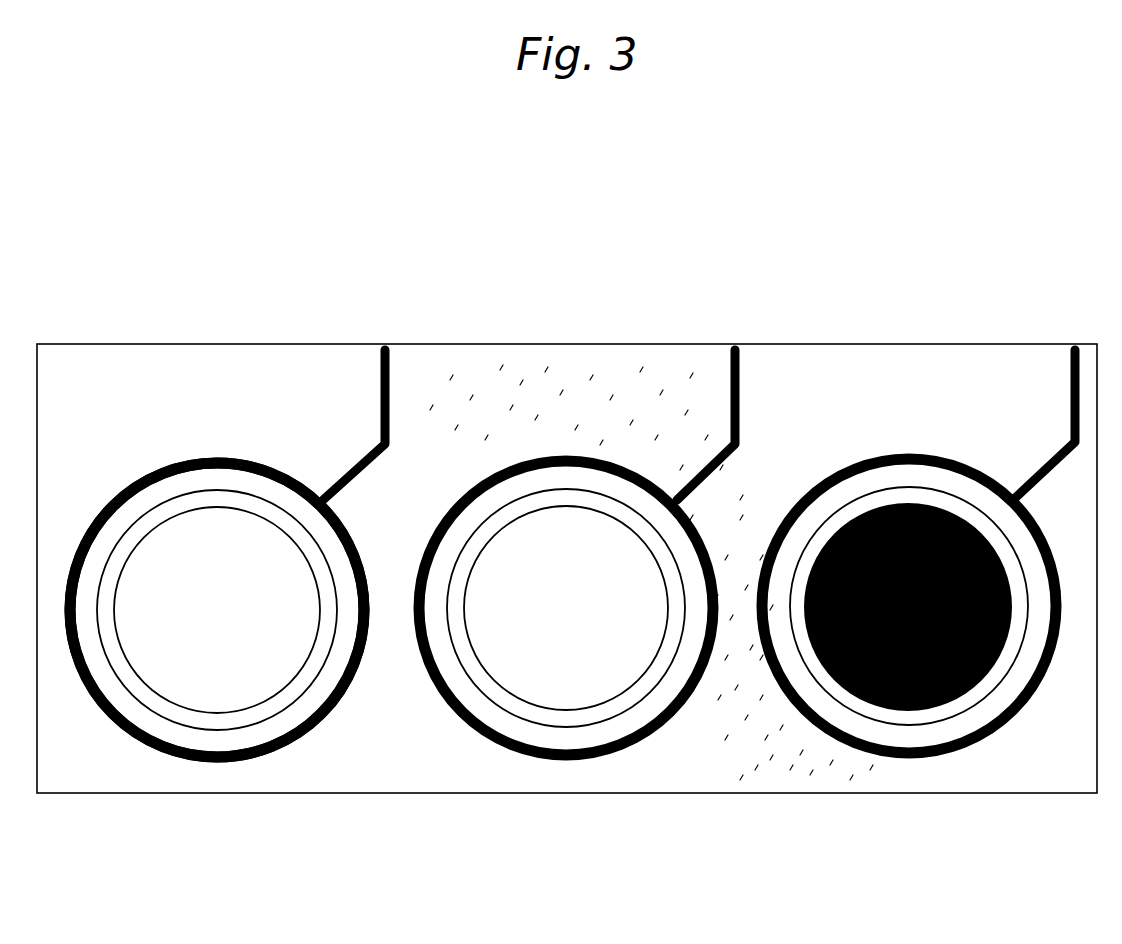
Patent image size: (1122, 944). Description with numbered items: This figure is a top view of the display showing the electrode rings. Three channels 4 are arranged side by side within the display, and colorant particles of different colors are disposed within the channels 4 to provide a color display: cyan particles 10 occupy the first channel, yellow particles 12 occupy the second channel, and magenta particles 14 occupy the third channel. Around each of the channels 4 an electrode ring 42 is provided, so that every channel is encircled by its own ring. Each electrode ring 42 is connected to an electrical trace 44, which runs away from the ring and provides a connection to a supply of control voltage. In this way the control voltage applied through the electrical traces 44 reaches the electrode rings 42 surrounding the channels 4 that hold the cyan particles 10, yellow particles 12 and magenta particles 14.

The channel 4 is at (253, 738).
The cyan particles 10 is at (183, 723).
The yellow particles 12 is at (575, 728).
The magenta particles 14 is at (873, 725).
The electrode ring 42 is at (152, 462).
The electrical trace 44 is at (365, 422).